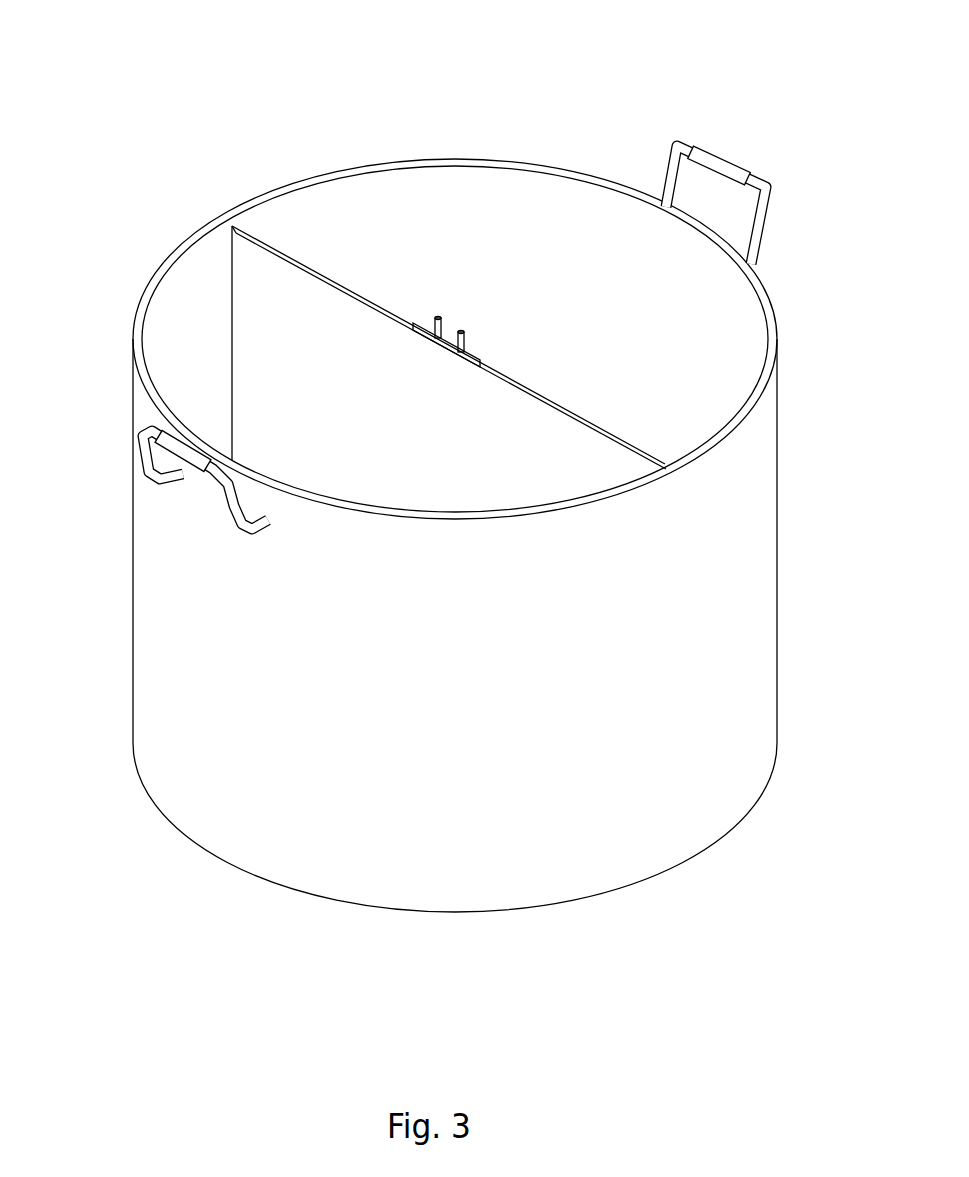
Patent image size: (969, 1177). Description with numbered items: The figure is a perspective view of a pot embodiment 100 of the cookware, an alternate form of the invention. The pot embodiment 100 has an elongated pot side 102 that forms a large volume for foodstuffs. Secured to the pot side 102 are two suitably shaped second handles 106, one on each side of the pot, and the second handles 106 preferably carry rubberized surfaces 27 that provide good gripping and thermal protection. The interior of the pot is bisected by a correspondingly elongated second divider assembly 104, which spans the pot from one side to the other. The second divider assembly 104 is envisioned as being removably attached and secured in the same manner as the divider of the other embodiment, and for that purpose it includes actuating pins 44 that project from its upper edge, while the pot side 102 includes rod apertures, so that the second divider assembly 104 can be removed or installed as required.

The pot embodiment 100 is at (517, 163).
The pot side 102 is at (707, 545).
The second divider assembly 104 is at (252, 297).
The actuating pins 44 is at (460, 332).
The rubberized surfaces 27 is at (713, 164).
The second handles 106 is at (770, 208).